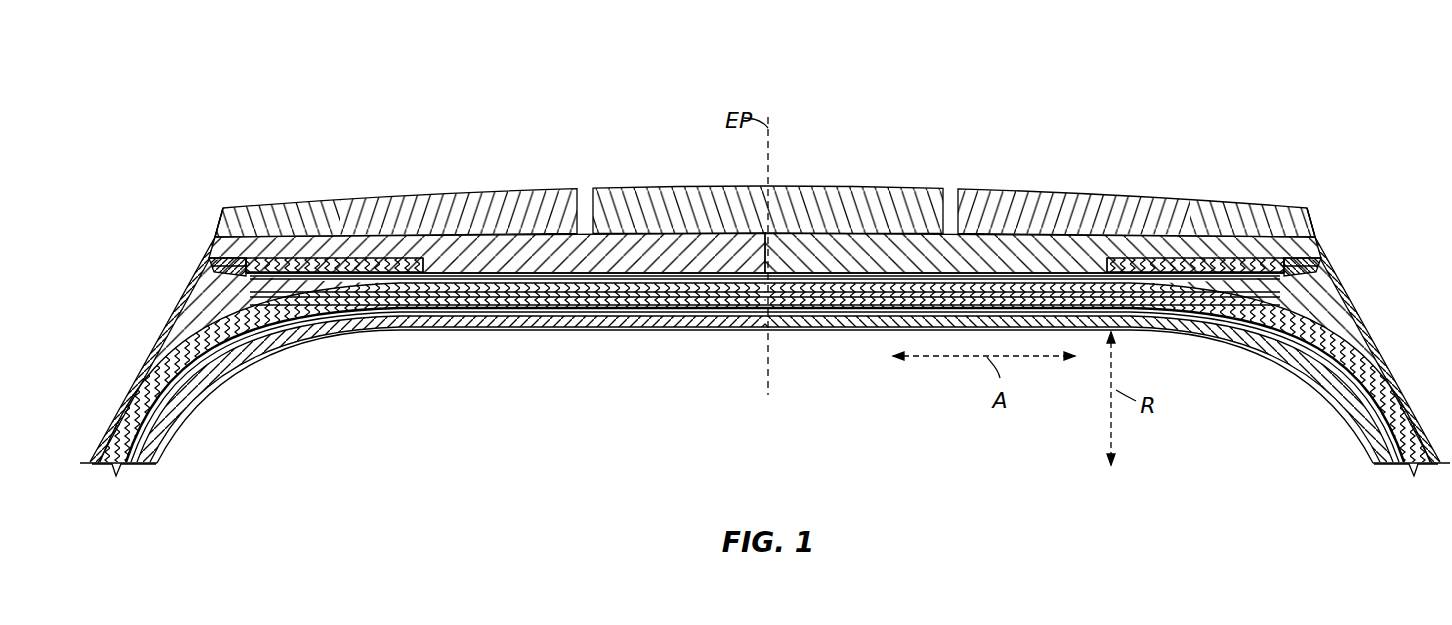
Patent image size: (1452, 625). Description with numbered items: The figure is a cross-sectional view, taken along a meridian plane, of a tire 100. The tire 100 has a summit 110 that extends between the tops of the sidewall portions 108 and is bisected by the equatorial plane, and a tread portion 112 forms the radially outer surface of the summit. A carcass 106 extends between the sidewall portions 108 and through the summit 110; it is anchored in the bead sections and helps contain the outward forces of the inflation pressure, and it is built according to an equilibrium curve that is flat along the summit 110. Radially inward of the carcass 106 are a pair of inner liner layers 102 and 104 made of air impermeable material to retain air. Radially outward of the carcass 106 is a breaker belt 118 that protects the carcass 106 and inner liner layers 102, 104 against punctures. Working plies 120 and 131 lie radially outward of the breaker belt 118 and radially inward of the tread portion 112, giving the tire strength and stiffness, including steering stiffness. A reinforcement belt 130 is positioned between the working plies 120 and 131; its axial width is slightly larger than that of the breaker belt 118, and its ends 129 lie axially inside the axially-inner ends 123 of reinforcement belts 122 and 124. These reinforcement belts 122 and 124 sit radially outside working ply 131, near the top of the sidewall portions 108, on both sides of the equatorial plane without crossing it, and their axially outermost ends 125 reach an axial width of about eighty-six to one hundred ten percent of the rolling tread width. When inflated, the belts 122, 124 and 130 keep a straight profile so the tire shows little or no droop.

The tire 100 is at (185, 85).
The inner liner layer 102 is at (1330, 390).
The inner liner layer 104 is at (1388, 440).
The carcass 106 is at (143, 437).
The sidewall portion 108 is at (120, 415).
The summit 110 is at (1342, 233).
The tread portion 112 is at (540, 191).
The breaker belt 118 is at (1100, 320).
The working ply 120 is at (1326, 325).
The reinforcement belt 122 is at (242, 265).
The axially-inner end 123 is at (441, 259).
The reinforcement belt 124 is at (232, 275).
The axially outermost end 125 is at (250, 286).
The end of reinforcement belt 129 is at (418, 318).
The reinforcement belt 130 is at (430, 265).
The working ply 131 is at (287, 277).